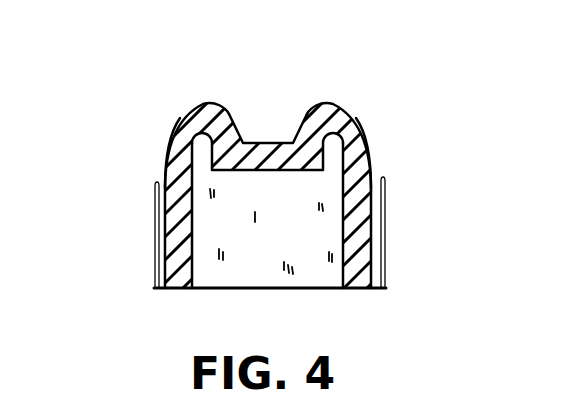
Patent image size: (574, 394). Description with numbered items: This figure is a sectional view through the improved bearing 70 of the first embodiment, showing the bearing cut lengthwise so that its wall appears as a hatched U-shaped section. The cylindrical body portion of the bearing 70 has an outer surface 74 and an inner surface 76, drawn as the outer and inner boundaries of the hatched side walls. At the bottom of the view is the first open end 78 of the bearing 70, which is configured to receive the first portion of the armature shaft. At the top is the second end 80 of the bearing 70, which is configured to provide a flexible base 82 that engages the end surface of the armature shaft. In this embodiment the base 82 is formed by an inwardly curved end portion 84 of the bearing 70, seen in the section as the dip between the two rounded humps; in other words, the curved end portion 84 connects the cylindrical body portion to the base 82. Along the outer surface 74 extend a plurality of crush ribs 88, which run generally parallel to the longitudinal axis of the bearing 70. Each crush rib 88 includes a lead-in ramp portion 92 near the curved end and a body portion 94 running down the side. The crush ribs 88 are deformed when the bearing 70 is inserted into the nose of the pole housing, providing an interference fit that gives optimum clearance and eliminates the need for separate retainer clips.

The bearing 70 is at (355, 55).
The outer surface 74 is at (382, 197).
The inner surface 76 is at (342, 218).
The first open end 78 is at (220, 289).
The second end 80 is at (352, 95).
The flexible base 82 is at (267, 203).
The inwardly curved end portion 84 is at (305, 116).
The crush ribs 88 is at (140, 222).
The lead-in ramp portion 92 is at (160, 180).
The body portion 94 is at (157, 233).